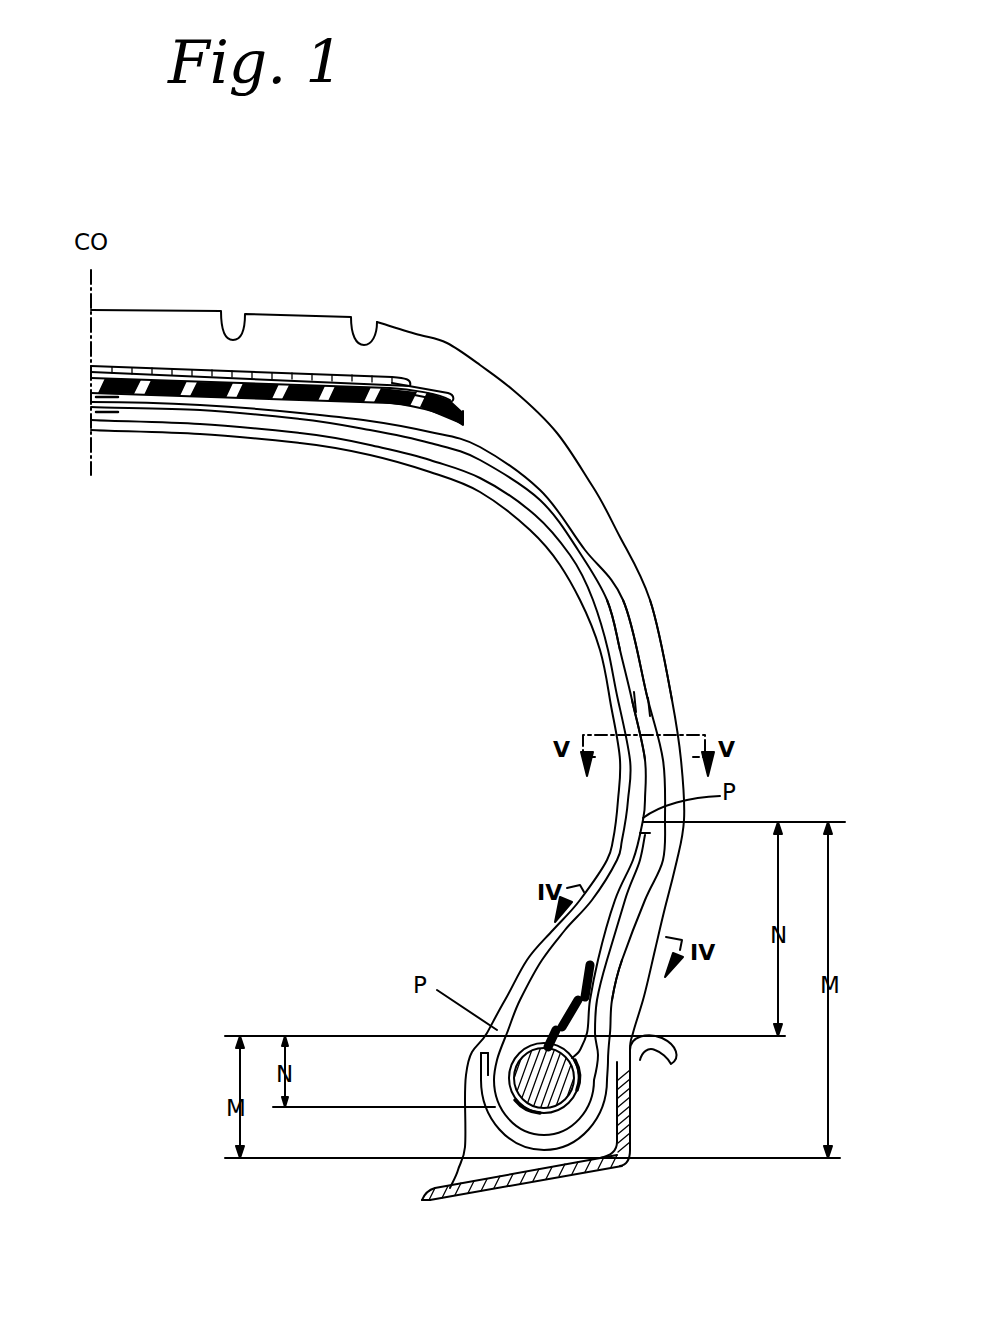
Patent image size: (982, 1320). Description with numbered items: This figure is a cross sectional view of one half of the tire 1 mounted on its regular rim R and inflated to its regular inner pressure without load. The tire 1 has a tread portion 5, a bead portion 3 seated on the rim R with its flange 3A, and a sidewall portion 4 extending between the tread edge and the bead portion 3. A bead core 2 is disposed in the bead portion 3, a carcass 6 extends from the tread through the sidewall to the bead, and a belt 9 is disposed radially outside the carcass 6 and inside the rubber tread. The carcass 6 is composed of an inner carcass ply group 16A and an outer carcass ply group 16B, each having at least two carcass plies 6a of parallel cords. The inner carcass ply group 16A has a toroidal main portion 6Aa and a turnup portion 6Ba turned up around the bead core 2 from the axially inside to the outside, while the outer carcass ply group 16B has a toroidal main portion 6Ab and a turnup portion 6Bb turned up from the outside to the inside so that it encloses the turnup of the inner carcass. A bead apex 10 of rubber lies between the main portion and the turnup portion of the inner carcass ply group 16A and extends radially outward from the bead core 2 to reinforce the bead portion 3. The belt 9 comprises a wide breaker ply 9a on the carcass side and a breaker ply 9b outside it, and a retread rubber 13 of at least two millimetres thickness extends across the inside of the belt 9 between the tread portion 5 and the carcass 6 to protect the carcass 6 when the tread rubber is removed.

The tire 1 is at (675, 457).
The bead core 2 is at (533, 1085).
The bead portion 3 is at (428, 1055).
The rim flange 3A is at (560, 1173).
The sidewall portion 4 is at (570, 672).
The tread portion 5 is at (187, 292).
The carcass 6 is at (428, 795).
The carcass ply 6a is at (637, 708).
The main portion of inner carcass ply group 6Aa is at (627, 657).
The main portion of outer carcass ply group 6Ab is at (640, 650).
The turnup portion of inner carcass ply group 6Ba is at (598, 1000).
The turnup portion of outer carcass ply group 6Bb is at (468, 1068).
The belt 9 is at (330, 340).
The wide breaker ply 9a is at (417, 383).
The breaker ply 9b is at (392, 372).
The bead apex 10 is at (532, 996).
The retread rubber 13 is at (308, 390).
The inner carcass ply group 16A is at (607, 617).
The outer carcass ply group 16B is at (613, 580).
The regular rim R is at (510, 1190).